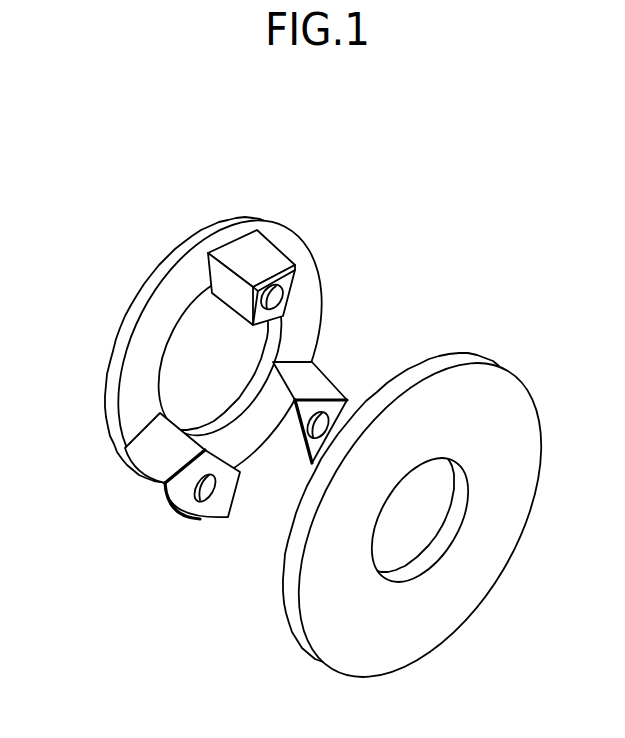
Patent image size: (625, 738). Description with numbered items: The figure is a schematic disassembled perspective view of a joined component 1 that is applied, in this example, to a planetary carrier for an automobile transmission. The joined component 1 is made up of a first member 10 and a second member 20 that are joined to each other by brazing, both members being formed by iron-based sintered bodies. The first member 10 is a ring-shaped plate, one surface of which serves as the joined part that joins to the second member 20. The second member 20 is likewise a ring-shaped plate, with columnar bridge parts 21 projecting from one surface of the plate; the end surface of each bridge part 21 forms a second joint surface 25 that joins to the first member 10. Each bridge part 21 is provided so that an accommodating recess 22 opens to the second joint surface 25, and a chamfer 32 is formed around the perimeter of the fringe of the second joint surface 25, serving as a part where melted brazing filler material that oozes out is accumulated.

The joined component 1 is at (494, 253).
The first member 10 is at (494, 360).
The second member 20 is at (153, 277).
The bridge part 21 is at (248, 256).
The accommodating recess 22 is at (279, 296).
The second joint surface 25 is at (285, 281).
The chamfer 32 is at (283, 268).